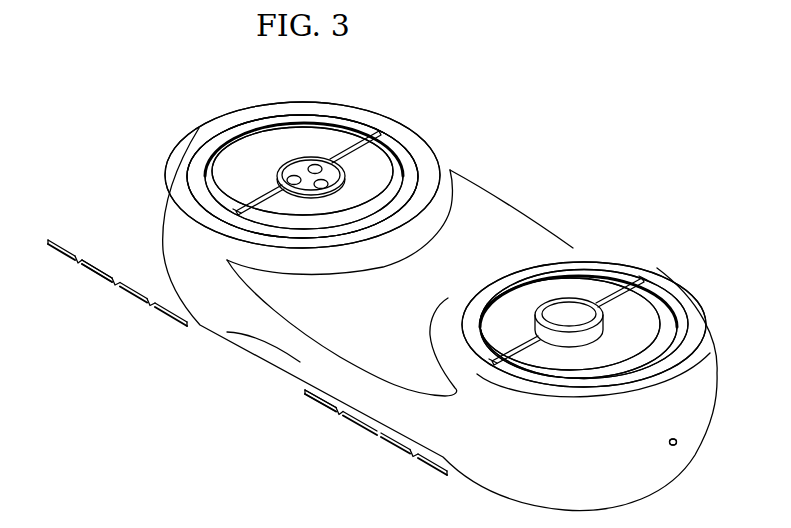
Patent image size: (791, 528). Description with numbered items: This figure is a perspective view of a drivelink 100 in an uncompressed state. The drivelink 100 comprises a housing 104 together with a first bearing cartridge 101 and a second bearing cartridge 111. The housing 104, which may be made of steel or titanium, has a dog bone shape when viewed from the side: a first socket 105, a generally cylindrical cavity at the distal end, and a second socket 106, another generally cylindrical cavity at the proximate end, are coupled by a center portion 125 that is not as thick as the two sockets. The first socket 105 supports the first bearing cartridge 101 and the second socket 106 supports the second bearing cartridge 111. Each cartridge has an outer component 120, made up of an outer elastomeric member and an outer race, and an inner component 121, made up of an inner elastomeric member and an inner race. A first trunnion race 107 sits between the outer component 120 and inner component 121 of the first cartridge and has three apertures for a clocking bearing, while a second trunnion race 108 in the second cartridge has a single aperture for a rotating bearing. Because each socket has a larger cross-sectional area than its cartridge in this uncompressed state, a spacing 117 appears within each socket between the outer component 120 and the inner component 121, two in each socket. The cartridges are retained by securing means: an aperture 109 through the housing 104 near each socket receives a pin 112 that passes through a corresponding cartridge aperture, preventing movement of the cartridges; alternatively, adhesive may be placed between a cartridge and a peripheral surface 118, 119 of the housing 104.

The drivelink 100 is at (575, 110).
The first bearing cartridge 101 is at (571, 286).
The housing 104 is at (709, 316).
The first socket 105 is at (407, 136).
The second socket 106 is at (668, 286).
The first trunnion race 107 is at (303, 167).
The second trunnion race 108 is at (580, 313).
The aperture 109 is at (674, 438).
The second bearing cartridge 111 is at (322, 133).
The pin 112 is at (668, 444).
The spacing 117 is at (375, 137).
The peripheral surface 118 is at (195, 178).
The peripheral surface 119 is at (670, 342).
The outer component 120 is at (242, 360).
The inner component 121 is at (209, 351).
The center portion 125 is at (342, 338).